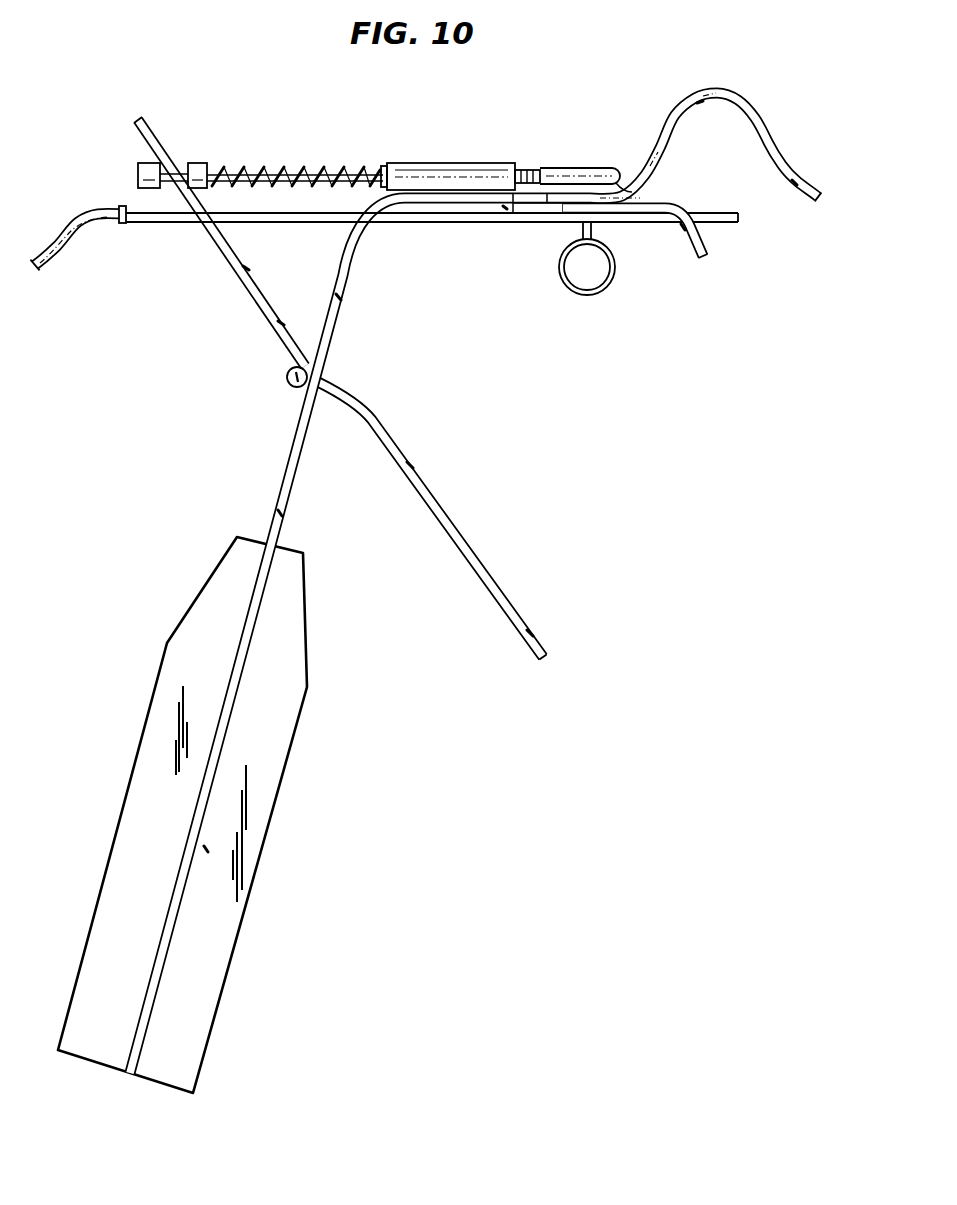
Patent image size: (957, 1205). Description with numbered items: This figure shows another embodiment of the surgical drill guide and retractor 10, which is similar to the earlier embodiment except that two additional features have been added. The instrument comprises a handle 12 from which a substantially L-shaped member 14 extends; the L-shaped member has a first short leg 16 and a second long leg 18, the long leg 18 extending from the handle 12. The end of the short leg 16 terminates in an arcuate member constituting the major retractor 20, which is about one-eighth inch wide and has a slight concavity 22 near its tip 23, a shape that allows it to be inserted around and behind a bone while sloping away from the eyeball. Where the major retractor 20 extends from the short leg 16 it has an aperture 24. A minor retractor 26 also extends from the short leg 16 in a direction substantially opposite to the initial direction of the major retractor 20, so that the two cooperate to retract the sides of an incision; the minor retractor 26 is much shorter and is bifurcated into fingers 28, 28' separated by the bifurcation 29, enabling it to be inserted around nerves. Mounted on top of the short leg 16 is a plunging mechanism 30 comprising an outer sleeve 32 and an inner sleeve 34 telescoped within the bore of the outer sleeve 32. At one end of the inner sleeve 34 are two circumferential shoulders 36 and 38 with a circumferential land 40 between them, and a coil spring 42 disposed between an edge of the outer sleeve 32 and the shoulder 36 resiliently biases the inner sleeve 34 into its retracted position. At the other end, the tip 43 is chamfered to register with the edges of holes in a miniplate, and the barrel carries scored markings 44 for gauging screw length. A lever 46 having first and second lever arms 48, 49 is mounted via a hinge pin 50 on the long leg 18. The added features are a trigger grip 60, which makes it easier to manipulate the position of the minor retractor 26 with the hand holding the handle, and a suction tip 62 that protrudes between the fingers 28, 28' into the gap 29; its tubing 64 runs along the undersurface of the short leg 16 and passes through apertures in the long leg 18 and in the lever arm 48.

The surgical drill guide and retractor 10 is at (234, 478).
The handle 12 is at (309, 684).
The L-shaped member 14 is at (498, 568).
The short leg 16 is at (401, 242).
The long leg 18 is at (287, 513).
The major retractor 20 is at (498, 568).
The concavity 22 is at (785, 156).
The tip 23 is at (821, 196).
The aperture 24 is at (493, 583).
The minor retractor 26 is at (668, 254).
The finger 28 is at (662, 252).
The finger 28' is at (680, 280).
The bifurcation 29 is at (668, 249).
The plunging mechanism 30 is at (497, 138).
The outer sleeve 32 is at (455, 163).
The inner sleeve 34 is at (572, 168).
The circumferential shoulder 36 is at (192, 163).
The circumferential shoulder 38 is at (138, 175).
The circumferential land 40 is at (170, 186).
The coil spring 42 is at (247, 165).
The tip 43 is at (620, 165).
The markings 44 is at (524, 170).
The lever 46 is at (453, 521).
The first lever arm 48 is at (218, 243).
The second lever arm 49 is at (509, 600).
The hinge pin 50 is at (288, 378).
The trigger grip 60 is at (578, 294).
The suction tip 62 is at (712, 226).
The tubing 64 is at (531, 223).